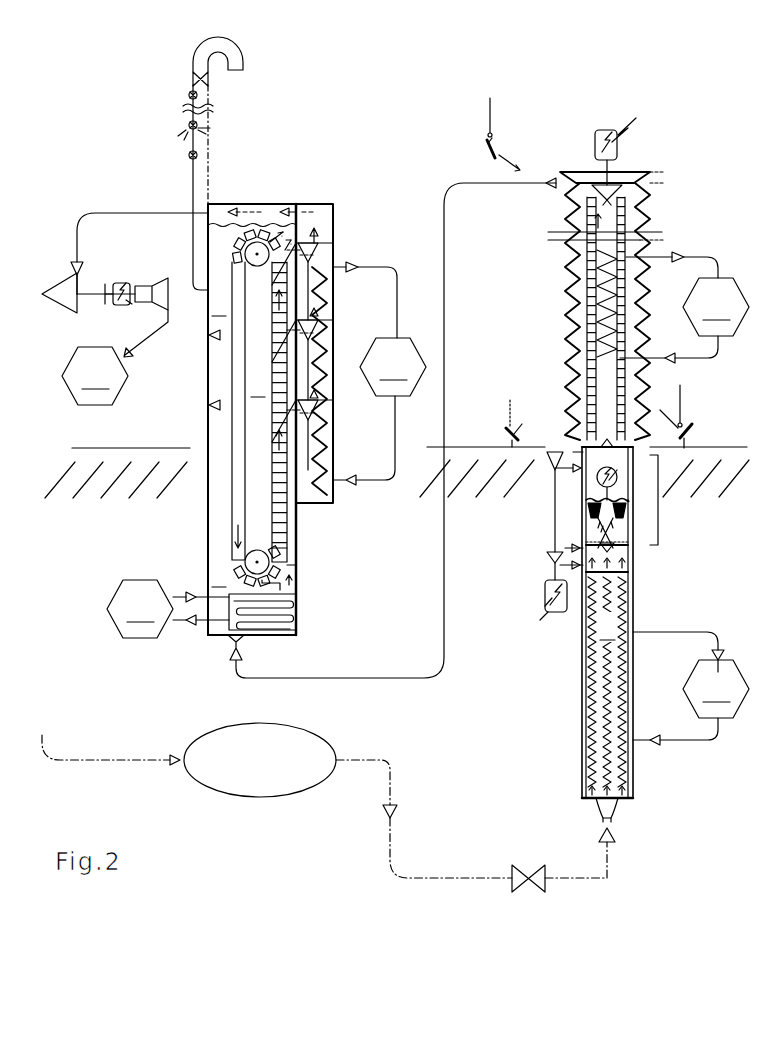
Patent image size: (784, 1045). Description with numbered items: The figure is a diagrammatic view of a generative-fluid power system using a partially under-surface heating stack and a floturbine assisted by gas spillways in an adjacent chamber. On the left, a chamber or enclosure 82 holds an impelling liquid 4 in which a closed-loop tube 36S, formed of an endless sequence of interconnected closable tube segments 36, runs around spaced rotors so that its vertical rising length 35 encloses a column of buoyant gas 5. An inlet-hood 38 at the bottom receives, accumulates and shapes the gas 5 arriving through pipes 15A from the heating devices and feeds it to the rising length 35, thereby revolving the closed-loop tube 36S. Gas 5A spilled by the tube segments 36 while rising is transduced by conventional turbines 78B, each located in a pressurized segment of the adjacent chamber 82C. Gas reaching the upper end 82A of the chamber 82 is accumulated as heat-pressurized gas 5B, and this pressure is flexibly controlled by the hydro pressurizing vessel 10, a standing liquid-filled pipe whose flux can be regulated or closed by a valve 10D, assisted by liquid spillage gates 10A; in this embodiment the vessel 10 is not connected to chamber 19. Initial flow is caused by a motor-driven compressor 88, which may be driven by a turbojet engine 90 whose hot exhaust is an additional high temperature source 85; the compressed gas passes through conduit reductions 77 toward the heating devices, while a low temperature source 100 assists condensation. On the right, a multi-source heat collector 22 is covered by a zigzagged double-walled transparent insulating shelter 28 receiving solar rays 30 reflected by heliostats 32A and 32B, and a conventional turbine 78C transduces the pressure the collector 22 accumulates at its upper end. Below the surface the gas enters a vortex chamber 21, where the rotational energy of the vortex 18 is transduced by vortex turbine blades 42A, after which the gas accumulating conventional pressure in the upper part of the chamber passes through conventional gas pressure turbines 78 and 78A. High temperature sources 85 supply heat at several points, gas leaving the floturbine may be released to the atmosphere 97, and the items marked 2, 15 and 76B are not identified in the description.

The lower heat exchange section 2 is at (607, 627).
The impelling liquid 4 is at (620, 528).
The generative fluid or gas 5 is at (290, 567).
The spilled gas 5A is at (320, 262).
The heat-pressurized gas 5B is at (262, 212).
The hydro pressurizing vessel 10 is at (210, 143).
The liquid spillage gates 10A is at (189, 154).
The valve 10D is at (190, 79).
The lower housing 15 is at (580, 798).
The pipes 15A is at (592, 693).
The vortex 18 is at (588, 518).
The chamber 19 is at (578, 736).
The vortex chamber 21 is at (655, 500).
The multi-source heat collector 22 is at (592, 355).
The double-walled transparent insulating shelter 28 is at (580, 172).
The sun beams 30 is at (492, 120).
The heliostat 32A is at (690, 428).
The heliostat 32B is at (485, 146).
The rising length 35 is at (270, 478).
The tube segments 36 is at (243, 246).
The closed-loop tube 36S is at (209, 404).
The inlet-hood 38 is at (296, 546).
The vortex turbine blades 42A is at (622, 514).
The ladder conveyor 76B is at (290, 487).
The conduit reductions 77 is at (528, 870).
The conventional gas turbine 78 is at (548, 560).
The conventional gas pressure turbine 78A is at (557, 458).
The conventional turbines 78B is at (335, 258).
The conventional turbine 78C is at (610, 207).
The chamber 82 is at (208, 556).
The chamber upper end 82A is at (258, 210).
The chamber 82C is at (336, 203).
The high temperature source 85 is at (405, 498).
The motor-driven compressor 88 is at (50, 290).
The turbojet engine 90 is at (153, 290).
The atmosphere 97 is at (432, 71).
The low temperature source 100 is at (282, 773).